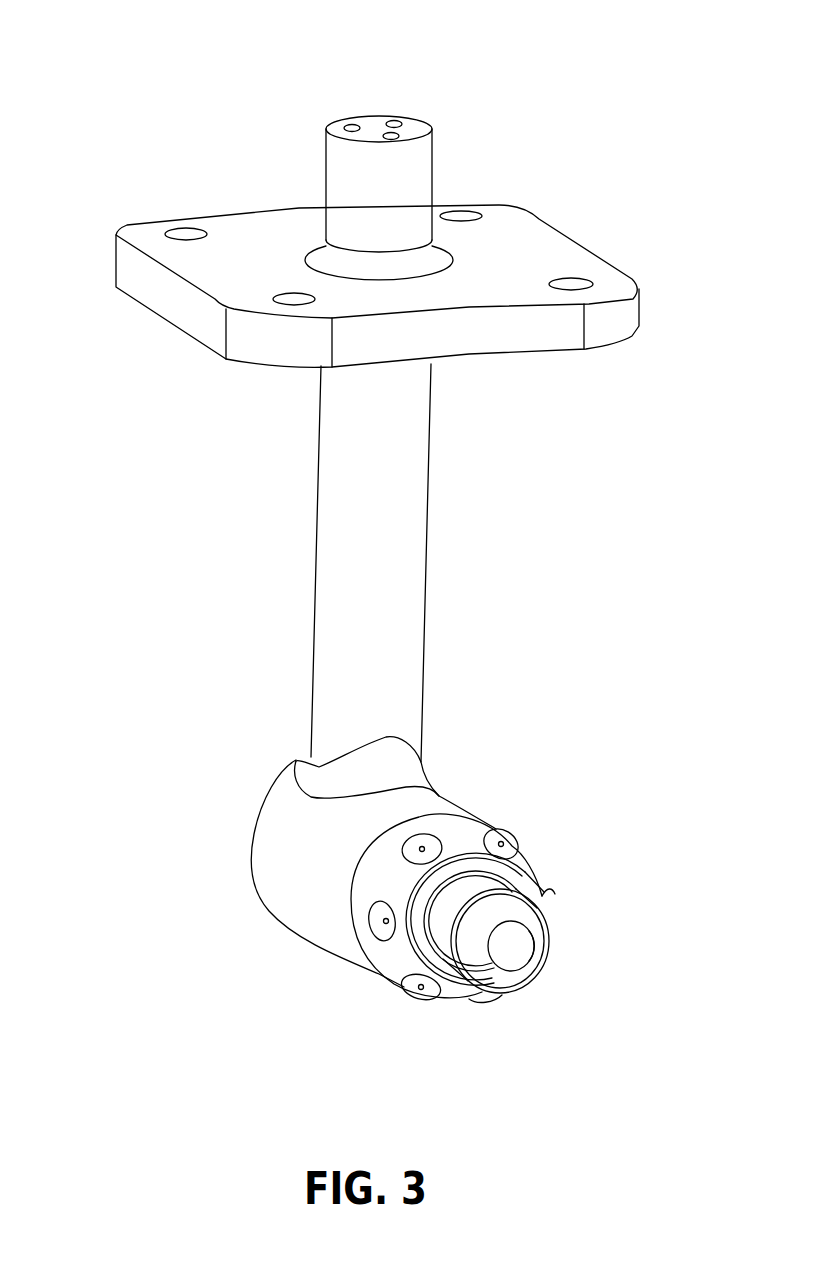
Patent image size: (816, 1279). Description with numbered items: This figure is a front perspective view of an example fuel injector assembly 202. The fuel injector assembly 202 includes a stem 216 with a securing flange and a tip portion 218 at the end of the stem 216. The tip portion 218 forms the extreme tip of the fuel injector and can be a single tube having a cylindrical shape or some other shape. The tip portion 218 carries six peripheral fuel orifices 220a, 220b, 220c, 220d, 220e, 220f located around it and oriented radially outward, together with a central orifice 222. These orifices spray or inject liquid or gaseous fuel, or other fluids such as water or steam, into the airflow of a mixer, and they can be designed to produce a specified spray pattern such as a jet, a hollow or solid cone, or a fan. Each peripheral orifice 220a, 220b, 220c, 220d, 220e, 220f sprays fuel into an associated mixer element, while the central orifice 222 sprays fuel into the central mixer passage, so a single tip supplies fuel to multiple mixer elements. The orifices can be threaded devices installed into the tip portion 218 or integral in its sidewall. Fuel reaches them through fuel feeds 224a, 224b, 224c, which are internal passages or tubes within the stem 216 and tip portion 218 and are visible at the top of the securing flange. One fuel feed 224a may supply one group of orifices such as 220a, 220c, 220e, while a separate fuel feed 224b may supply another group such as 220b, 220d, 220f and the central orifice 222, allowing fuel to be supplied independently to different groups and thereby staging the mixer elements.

The fuel injector assembly 202 is at (184, 66).
The stem 216 is at (368, 613).
The tip portion 218 is at (413, 903).
The peripheral fuel orifice 220a is at (502, 845).
The peripheral fuel orifice 220b is at (543, 895).
The peripheral fuel orifice 220c is at (487, 993).
The peripheral fuel orifice 220d is at (420, 992).
The peripheral fuel orifice 220e is at (387, 922).
The peripheral fuel orifice 220f is at (423, 848).
The central orifice 222 is at (513, 942).
The fuel feed 224a is at (395, 125).
The fuel feed 224b is at (392, 137).
The fuel feed 224c is at (353, 129).